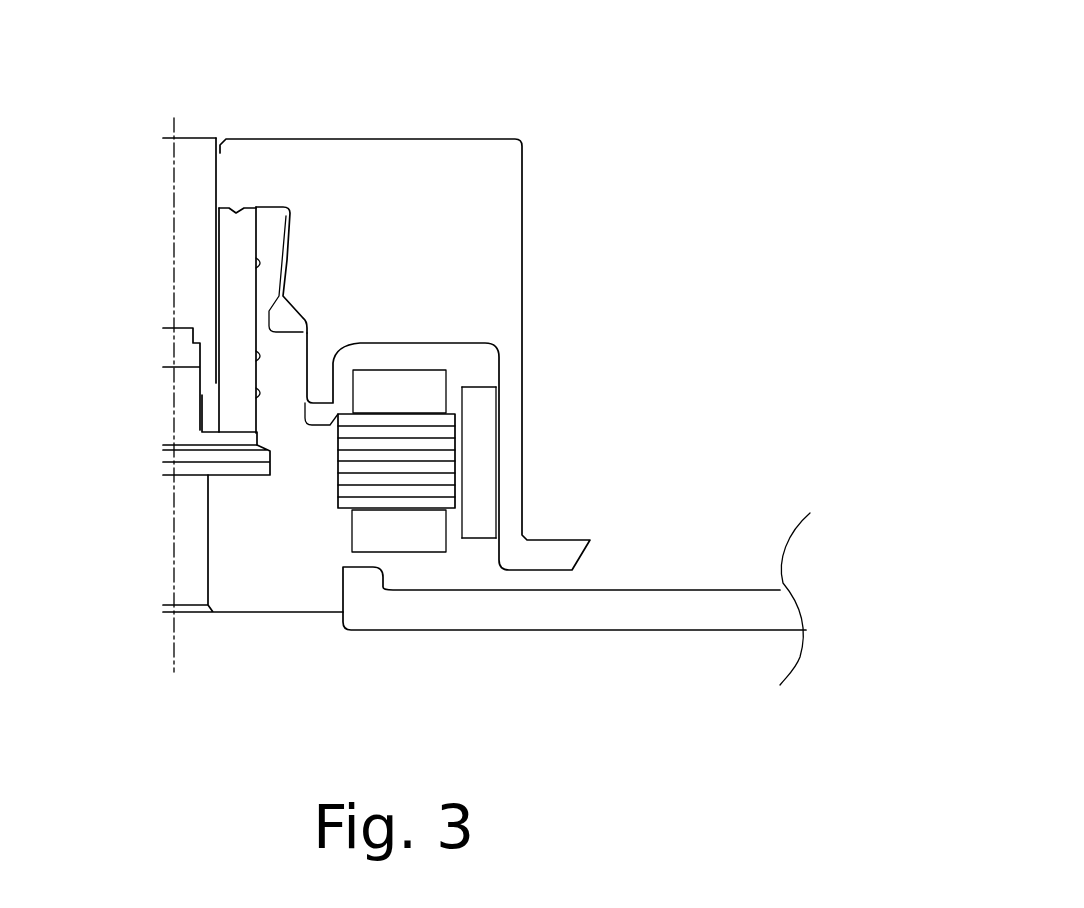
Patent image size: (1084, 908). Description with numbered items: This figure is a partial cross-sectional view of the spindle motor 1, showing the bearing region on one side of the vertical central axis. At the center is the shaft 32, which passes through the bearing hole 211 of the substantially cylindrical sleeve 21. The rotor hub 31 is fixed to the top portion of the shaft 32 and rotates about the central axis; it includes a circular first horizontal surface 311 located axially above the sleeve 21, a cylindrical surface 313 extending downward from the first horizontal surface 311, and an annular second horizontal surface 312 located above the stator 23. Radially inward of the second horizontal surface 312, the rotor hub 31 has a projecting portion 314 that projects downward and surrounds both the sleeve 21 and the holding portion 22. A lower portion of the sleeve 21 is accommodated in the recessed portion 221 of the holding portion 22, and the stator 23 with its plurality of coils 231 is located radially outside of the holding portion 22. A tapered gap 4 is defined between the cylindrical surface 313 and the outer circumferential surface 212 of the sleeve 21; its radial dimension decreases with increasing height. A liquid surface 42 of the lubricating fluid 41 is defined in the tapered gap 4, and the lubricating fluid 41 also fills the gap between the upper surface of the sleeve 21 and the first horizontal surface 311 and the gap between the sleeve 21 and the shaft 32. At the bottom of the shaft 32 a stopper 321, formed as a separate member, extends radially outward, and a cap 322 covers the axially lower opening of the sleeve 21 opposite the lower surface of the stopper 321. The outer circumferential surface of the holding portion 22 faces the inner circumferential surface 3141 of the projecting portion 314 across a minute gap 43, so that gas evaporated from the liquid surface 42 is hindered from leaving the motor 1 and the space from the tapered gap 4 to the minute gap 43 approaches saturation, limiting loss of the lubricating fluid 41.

The motor 1 is at (72, 58).
The sleeve 21 is at (268, 235).
The bearing hole 211 is at (190, 152).
The outer circumferential surface of the sleeve 212 is at (268, 273).
The holding portion 22 is at (292, 423).
The recessed portion 221 is at (307, 375).
The stator 23 is at (420, 557).
The coils 231 is at (407, 533).
The rotor hub 31 is at (477, 150).
The first horizontal surface 311 is at (238, 198).
The second horizontal surface 312 is at (307, 352).
The cylindrical surface 313 is at (285, 283).
The projecting portion 314 is at (323, 380).
The inner circumferential surface of the projecting portion 3141 is at (493, 346).
The shaft 32 is at (205, 150).
The stopper 321 is at (199, 436).
The cap 322 is at (257, 450).
The tapered gap 4 is at (292, 227).
The lubricating fluid 41 is at (290, 253).
The liquid surface 42 is at (288, 263).
The minute gap 43 is at (300, 367).